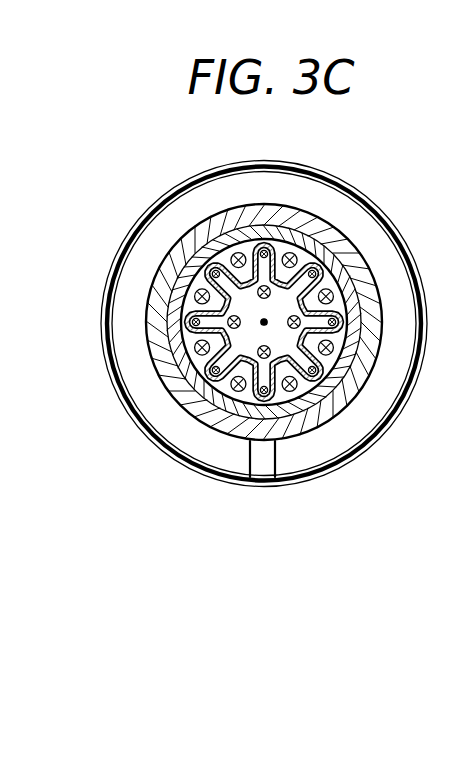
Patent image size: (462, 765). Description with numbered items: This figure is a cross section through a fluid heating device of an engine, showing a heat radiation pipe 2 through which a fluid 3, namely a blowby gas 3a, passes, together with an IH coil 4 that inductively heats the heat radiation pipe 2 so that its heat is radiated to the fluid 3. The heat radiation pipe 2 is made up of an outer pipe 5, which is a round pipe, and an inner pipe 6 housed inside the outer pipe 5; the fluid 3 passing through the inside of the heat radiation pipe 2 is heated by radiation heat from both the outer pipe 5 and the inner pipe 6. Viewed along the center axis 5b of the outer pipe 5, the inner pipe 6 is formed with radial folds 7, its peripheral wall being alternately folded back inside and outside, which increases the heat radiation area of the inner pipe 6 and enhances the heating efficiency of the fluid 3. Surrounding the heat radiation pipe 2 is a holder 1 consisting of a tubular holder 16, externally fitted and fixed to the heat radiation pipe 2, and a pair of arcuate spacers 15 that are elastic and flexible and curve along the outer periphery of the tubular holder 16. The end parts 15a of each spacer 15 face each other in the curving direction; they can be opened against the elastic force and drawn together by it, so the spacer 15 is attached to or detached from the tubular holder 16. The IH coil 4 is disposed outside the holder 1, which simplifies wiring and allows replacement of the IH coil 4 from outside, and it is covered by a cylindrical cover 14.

The holder 1 is at (264, 293).
The heat radiation pipe 2 is at (314, 391).
The fluid 3 is at (241, 394).
The blowby gas 3a is at (206, 391).
The IH coil 4 is at (343, 170).
The outer pipe 5 is at (322, 393).
The center axis 5b is at (268, 325).
The inner pipe 6 is at (304, 420).
The radial folds 7 is at (237, 255).
The cylindrical cover 14 is at (389, 215).
The spacer 15 is at (255, 172).
The end parts 15a is at (248, 463).
The tubular holder 16 is at (262, 186).